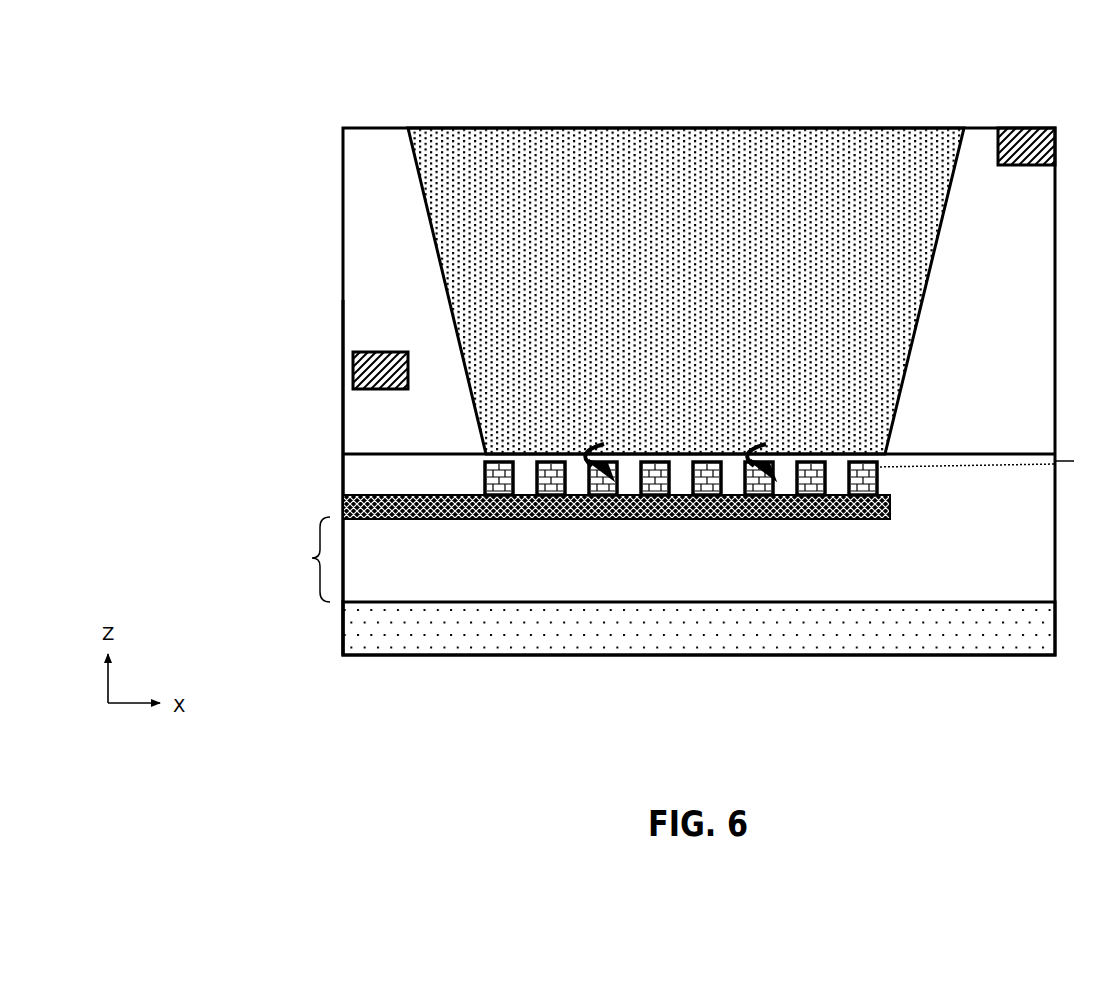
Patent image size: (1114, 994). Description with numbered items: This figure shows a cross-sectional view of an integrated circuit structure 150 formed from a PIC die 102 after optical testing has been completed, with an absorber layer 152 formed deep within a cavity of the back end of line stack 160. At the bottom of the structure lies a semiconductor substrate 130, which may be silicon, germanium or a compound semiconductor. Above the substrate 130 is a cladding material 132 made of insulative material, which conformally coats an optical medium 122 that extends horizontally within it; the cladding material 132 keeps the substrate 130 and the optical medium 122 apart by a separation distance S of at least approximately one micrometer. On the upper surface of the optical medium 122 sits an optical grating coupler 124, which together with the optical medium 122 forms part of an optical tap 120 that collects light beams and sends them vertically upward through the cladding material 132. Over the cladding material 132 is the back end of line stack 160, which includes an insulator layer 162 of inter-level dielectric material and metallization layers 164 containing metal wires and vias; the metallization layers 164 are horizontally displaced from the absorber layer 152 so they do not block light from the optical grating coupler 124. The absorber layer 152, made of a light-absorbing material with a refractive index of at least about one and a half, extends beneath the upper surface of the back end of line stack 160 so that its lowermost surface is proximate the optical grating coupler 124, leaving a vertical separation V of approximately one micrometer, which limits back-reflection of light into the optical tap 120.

The integrated circuit structure 150 is at (382, 121).
The absorber layer 152 is at (880, 135).
The back end of line stack 160 is at (336, 243).
The insulator layer 162 is at (392, 161).
The metallization layer 164 is at (388, 371).
The PIC die 102 is at (338, 408).
The optical grating coupler 124 is at (488, 468).
The optical medium 122 is at (343, 493).
The cladding material 132 is at (389, 481).
The optical tap 120 is at (525, 537).
The substrate 130 is at (385, 617).
The separation distance S is at (304, 559).
The vertical separation V is at (986, 463).